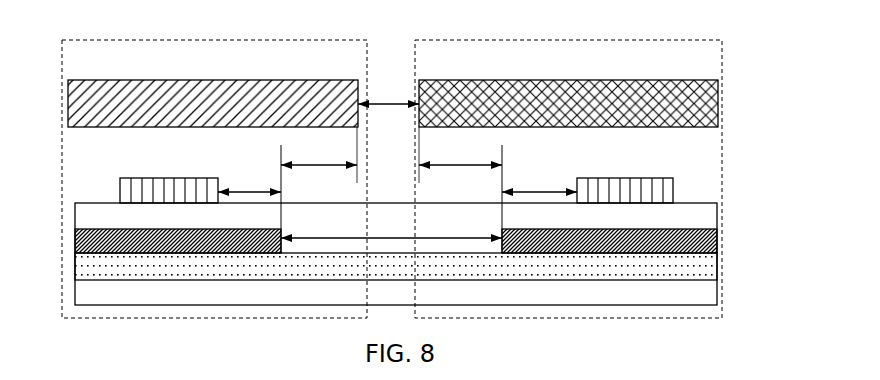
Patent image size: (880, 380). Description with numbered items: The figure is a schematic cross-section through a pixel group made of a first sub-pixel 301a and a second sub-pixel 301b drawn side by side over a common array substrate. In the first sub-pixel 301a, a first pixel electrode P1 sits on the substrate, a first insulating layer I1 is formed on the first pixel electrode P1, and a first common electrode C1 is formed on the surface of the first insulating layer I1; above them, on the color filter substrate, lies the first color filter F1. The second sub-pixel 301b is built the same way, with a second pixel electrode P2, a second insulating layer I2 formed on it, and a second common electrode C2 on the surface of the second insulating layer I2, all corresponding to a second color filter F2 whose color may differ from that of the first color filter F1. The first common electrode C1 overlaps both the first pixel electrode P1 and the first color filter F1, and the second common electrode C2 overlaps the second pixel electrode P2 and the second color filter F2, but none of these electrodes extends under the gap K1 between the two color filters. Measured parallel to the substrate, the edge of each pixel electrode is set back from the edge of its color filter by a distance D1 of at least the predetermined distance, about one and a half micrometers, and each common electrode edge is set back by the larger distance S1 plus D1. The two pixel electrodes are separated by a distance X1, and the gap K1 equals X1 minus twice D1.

The first sub-pixel 301a is at (213, 40).
The second sub-pixel 301b is at (530, 40).
The first color filter F1 is at (110, 107).
The second color filter F2 is at (700, 100).
The gap between the first color filter and the second color filter K1 is at (388, 86).
The distance between the edge of the pixel electrode and the edge of the color filte D1 is at (391, 147).
The first common electrode C1 is at (150, 185).
The second common electrode C2 is at (650, 185).
The distance between the edge of the common electrode and the edge of the pixel elec S1 is at (397, 179).
The first insulating layer I1 is at (118, 224).
The second insulating layer I2 is at (680, 225).
The first pixel electrode P1 is at (75, 232).
The second pixel electrode P2 is at (717, 232).
The distance between the edge of the first pixel electrode and the edge of the secon X1 is at (391, 223).